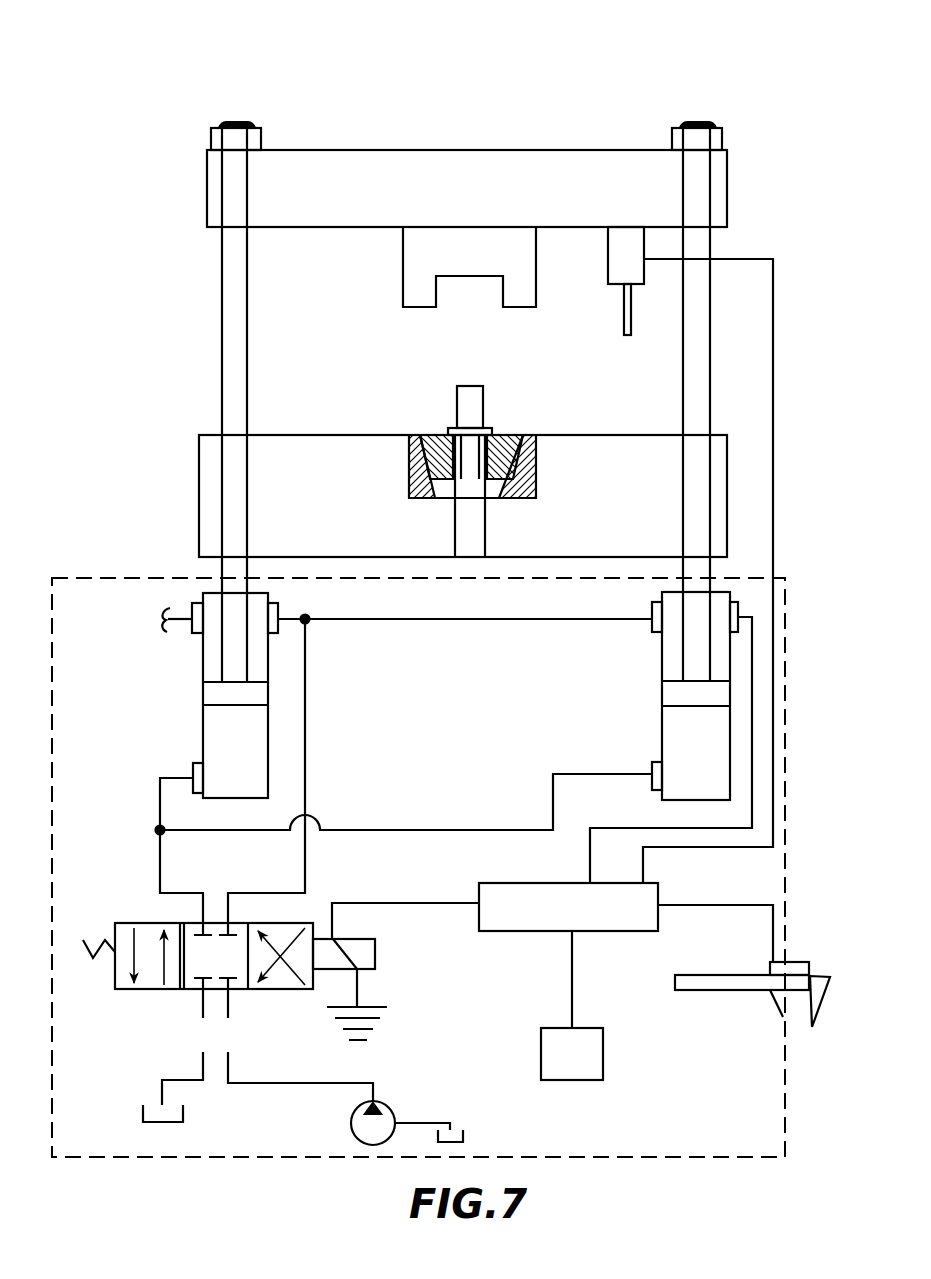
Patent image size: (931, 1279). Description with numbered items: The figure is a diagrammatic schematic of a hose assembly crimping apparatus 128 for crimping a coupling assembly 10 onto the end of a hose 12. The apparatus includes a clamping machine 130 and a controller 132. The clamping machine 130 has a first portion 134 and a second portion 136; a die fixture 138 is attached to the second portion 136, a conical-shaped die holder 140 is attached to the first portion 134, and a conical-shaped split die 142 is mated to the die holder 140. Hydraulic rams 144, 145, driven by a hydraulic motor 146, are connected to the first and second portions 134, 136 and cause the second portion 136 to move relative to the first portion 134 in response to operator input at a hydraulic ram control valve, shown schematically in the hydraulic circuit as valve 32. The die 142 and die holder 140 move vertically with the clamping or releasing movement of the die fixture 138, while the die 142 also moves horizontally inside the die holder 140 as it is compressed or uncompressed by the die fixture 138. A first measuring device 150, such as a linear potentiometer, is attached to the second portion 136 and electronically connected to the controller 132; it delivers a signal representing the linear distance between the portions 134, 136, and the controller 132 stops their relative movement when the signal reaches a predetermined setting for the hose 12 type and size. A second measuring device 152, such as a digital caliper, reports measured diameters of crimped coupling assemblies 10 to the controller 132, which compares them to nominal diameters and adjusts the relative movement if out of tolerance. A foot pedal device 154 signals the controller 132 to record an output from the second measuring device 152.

The clamping machine 130 is at (576, 102).
The second portion 136 is at (204, 187).
The die fixture 138 is at (422, 264).
The first measuring device 150 is at (598, 256).
The hose assembly crimping apparatus 128 is at (778, 246).
The first portion 134 is at (195, 489).
The coupling assembly 10 is at (462, 458).
The hose 12 is at (465, 538).
The die holder 140 is at (523, 488).
The split die 142 is at (505, 453).
The hydraulic ram 144 is at (280, 735).
The hydraulic ram 145 is at (636, 683).
The directional control valve 32 is at (134, 916).
The hydraulic motor 146 is at (397, 1100).
The controller 132 is at (589, 940).
The second measuring device 152 is at (752, 994).
The foot pedal device 154 is at (614, 1062).